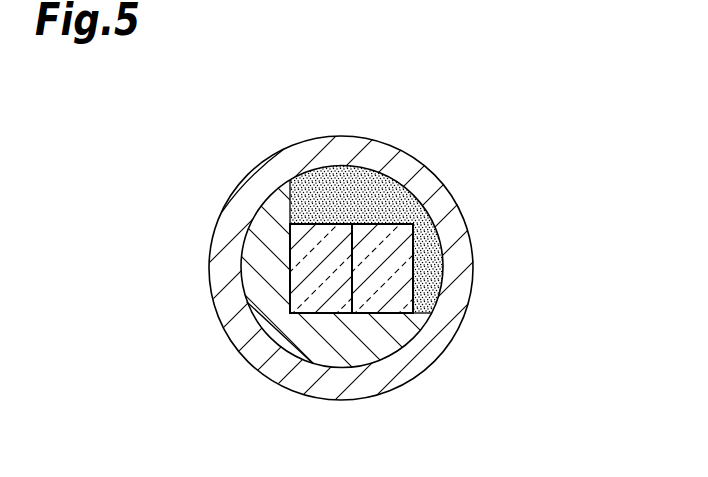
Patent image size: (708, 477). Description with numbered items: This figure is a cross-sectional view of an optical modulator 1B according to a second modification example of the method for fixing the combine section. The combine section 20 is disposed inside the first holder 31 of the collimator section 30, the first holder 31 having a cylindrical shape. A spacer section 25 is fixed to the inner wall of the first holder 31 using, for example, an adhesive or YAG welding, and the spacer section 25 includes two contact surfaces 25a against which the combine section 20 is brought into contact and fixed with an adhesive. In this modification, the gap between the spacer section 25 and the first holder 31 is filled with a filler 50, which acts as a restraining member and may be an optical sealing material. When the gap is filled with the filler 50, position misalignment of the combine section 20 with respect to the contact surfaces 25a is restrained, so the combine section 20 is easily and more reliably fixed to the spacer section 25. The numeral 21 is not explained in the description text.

The optical modulator 1B is at (538, 133).
The combine section 20 is at (420, 273).
The top surface of element 21 is at (323, 228).
The spacer section 25 is at (387, 342).
The contact surfaces 25a is at (290, 264).
The collimator section 30 is at (414, 156).
The first holder 31 is at (257, 353).
The filler 50 is at (368, 169).